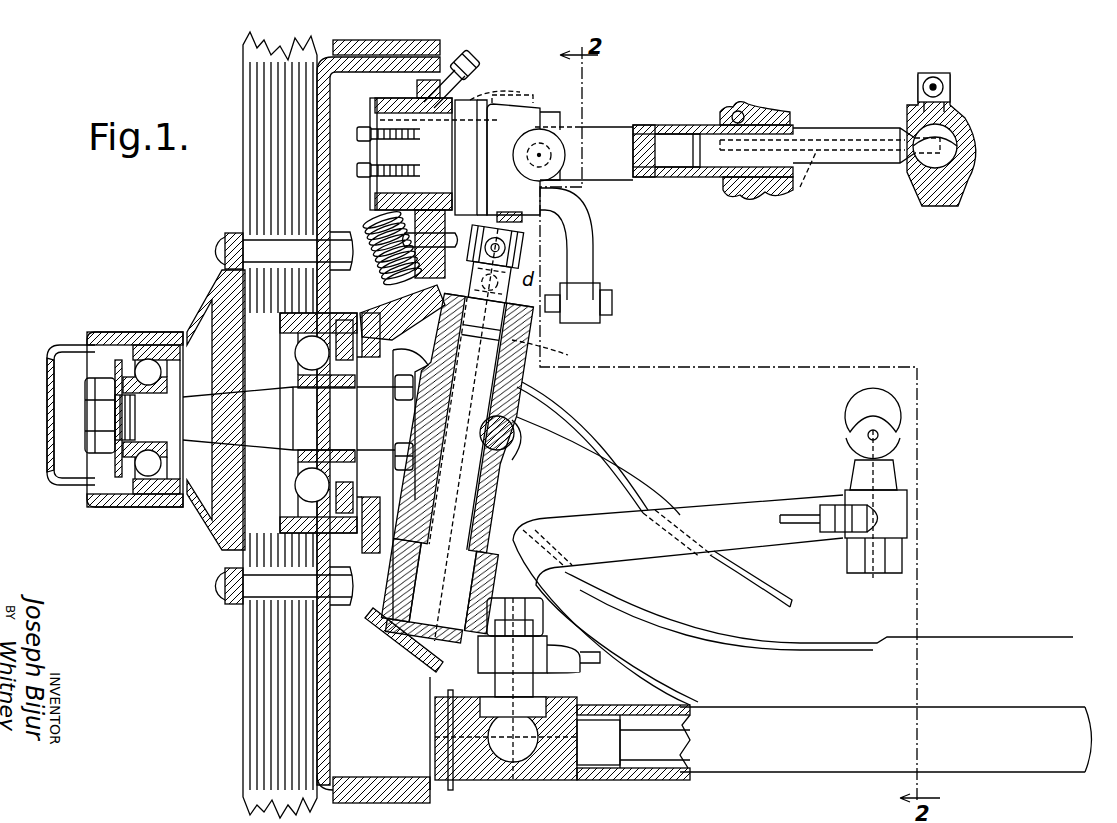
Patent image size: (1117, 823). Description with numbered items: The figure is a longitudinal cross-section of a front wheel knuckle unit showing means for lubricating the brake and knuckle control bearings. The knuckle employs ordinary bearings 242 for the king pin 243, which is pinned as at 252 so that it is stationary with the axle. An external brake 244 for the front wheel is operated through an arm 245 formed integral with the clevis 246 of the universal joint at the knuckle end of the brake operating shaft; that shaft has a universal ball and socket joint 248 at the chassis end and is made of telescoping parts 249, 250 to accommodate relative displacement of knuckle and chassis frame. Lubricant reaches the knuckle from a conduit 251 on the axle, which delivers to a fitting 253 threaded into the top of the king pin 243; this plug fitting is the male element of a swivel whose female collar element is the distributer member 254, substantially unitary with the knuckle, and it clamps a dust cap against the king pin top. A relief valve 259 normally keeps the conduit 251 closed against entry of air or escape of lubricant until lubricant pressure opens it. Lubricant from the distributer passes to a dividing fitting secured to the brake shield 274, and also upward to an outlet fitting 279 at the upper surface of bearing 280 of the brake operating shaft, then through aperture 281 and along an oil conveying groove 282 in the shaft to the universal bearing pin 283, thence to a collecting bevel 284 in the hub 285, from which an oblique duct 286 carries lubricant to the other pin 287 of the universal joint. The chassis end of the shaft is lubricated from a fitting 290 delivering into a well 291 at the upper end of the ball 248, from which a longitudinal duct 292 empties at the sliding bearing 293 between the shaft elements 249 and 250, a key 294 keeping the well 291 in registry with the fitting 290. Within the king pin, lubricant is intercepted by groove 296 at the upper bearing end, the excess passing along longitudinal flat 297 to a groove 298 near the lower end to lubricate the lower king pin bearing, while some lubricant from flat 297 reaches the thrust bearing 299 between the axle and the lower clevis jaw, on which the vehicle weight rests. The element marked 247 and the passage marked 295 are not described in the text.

The bearings 242 is at (527, 365).
The king pin 243 is at (530, 405).
The external brake 244 is at (437, 53).
The arm 245 is at (583, 251).
The clevis 246 is at (550, 103).
The screw 247 is at (755, 136).
The universal ball and socket joint 248 is at (930, 162).
The telescoping part 249 is at (847, 158).
The telescoping part 250 is at (702, 178).
The conduit 251 is at (770, 592).
The pin 252 is at (512, 450).
The fitting 253 is at (397, 279).
The distributer member 254 is at (554, 233).
The relief valve 259 is at (539, 305).
The brake shield 274 is at (420, 653).
The outlet fitting 279 is at (472, 82).
The bearing 280 is at (398, 98).
The aperture 281 is at (437, 118).
The oil conveying groove 282 is at (478, 98).
The universal bearing pin 283 is at (510, 130).
The collecting bevel 284 is at (525, 132).
The hub 285 is at (505, 190).
The oblique duct 286 is at (572, 127).
The pin 287 is at (565, 155).
The fitting 290 is at (950, 87).
The well 291 is at (963, 134).
The longitudinal duct 292 is at (800, 187).
The sliding bearing 293 is at (717, 126).
The key 294 is at (793, 131).
The passage 295 is at (560, 353).
The groove 296 is at (464, 422).
The longitudinal flat 297 is at (465, 435).
The groove 298 is at (438, 593).
The thrust bearing 299 is at (446, 565).